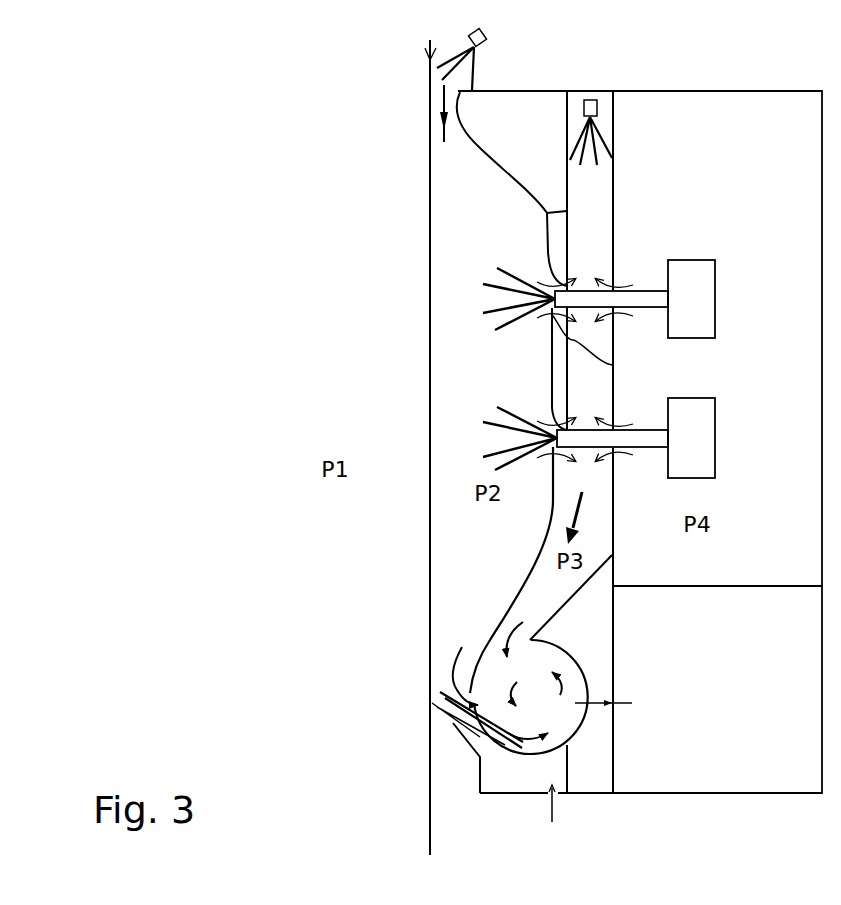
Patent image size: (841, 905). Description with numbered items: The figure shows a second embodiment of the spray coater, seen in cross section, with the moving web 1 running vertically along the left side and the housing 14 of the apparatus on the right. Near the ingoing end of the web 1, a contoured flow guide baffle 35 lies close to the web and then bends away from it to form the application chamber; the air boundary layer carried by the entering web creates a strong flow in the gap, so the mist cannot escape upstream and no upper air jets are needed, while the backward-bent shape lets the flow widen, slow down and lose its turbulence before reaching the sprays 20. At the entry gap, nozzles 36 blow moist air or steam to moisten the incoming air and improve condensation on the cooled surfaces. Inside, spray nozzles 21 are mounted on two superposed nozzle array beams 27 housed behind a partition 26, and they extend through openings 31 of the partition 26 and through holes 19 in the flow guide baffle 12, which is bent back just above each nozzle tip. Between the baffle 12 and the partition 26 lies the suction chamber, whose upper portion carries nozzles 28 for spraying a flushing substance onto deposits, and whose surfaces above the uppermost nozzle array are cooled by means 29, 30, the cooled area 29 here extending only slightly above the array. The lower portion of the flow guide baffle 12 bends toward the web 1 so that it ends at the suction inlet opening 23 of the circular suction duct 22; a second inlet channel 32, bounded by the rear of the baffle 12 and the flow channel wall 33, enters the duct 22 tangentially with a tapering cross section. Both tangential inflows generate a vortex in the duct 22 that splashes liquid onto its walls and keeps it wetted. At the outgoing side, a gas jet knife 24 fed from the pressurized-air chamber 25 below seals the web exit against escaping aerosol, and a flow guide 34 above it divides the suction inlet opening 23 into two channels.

The web 1 is at (430, 237).
The flow guide baffle 12 is at (545, 538).
The housing 14 is at (773, 91).
The through holes 19 is at (540, 417).
The sprays 20 is at (490, 418).
The spray nozzles 21 is at (648, 300).
The suction duct 22 is at (578, 657).
The suction inlet opening 23 is at (446, 678).
The gas jet knife 24 is at (452, 728).
The pressurized-air chamber 25 is at (515, 782).
The partition 26 is at (613, 522).
The nozzle array beams 27 is at (697, 313).
The nozzles 28 is at (597, 108).
The cooled area 29 is at (568, 243).
The cooling means 30 is at (601, 350).
The openings 31 is at (618, 318).
The inlet channel 32 is at (508, 623).
The flow channel wall 33 is at (597, 572).
The flow guide 34 is at (440, 697).
The flow guide baffle 35 is at (503, 153).
The nozzles 36 is at (487, 38).